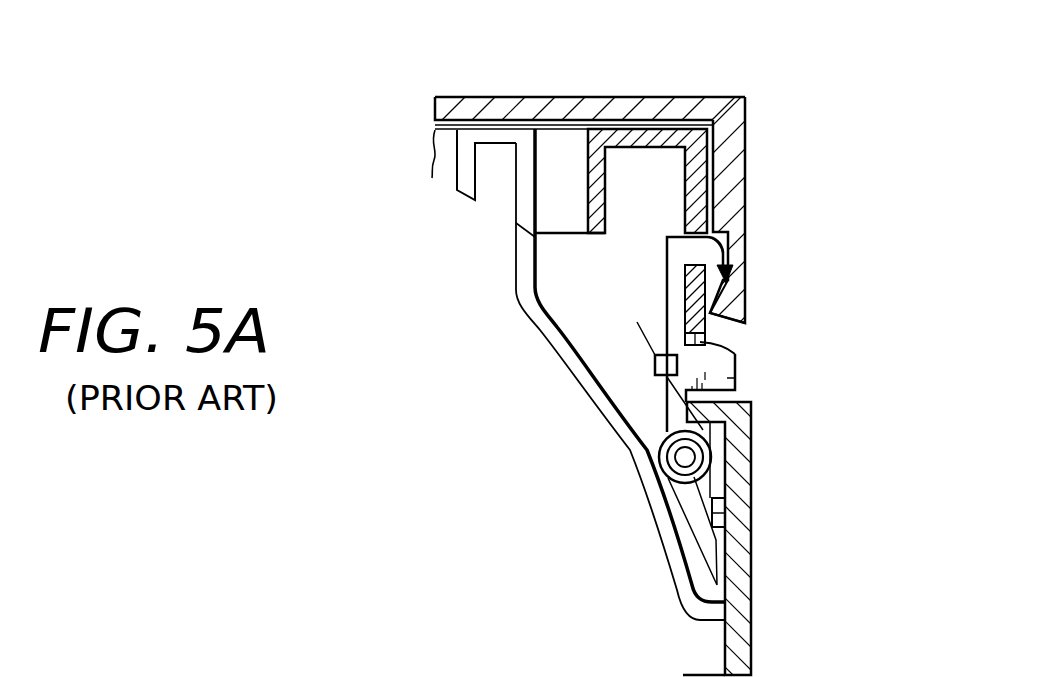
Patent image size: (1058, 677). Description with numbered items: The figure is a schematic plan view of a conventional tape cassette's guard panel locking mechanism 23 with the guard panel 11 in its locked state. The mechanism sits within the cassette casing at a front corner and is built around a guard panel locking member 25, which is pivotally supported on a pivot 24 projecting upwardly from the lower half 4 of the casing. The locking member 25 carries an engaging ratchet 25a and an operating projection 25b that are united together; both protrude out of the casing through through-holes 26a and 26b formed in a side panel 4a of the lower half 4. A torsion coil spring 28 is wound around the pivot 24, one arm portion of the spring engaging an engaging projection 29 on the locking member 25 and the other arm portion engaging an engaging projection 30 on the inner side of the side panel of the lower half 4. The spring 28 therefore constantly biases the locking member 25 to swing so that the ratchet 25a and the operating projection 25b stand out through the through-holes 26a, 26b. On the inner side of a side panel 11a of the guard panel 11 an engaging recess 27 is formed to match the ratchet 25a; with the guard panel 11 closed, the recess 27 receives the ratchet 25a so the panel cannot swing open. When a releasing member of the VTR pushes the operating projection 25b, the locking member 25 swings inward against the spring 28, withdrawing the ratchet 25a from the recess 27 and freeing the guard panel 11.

The guard panel 11 is at (563, 107).
The side panel of the guard panel 11a is at (735, 148).
The lower half 4 is at (752, 520).
The side panel of the lower half 4a is at (747, 310).
The guard panel locking mechanism 23 is at (522, 442).
The pivot 24 is at (685, 457).
The guard panel locking member 25 is at (667, 270).
The engaging ratchet 25a is at (747, 255).
The operating projection 25b is at (737, 376).
The through-hole 26a is at (745, 232).
The through-hole 26b is at (735, 356).
The engaging recess 27 is at (748, 268).
The torsion coil spring 28 is at (710, 513).
The engaging projection 29 is at (655, 364).
The engaging projection 30 is at (700, 522).